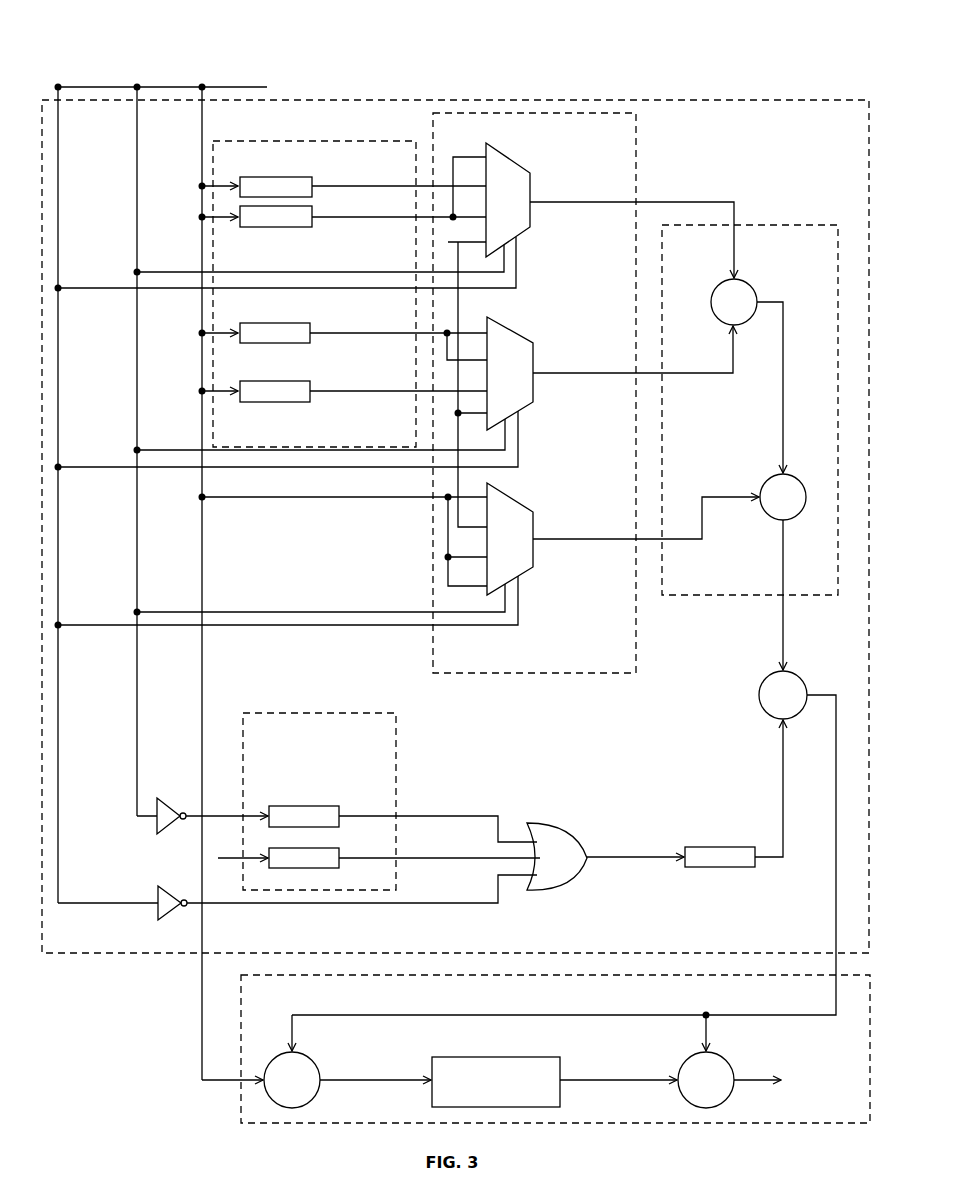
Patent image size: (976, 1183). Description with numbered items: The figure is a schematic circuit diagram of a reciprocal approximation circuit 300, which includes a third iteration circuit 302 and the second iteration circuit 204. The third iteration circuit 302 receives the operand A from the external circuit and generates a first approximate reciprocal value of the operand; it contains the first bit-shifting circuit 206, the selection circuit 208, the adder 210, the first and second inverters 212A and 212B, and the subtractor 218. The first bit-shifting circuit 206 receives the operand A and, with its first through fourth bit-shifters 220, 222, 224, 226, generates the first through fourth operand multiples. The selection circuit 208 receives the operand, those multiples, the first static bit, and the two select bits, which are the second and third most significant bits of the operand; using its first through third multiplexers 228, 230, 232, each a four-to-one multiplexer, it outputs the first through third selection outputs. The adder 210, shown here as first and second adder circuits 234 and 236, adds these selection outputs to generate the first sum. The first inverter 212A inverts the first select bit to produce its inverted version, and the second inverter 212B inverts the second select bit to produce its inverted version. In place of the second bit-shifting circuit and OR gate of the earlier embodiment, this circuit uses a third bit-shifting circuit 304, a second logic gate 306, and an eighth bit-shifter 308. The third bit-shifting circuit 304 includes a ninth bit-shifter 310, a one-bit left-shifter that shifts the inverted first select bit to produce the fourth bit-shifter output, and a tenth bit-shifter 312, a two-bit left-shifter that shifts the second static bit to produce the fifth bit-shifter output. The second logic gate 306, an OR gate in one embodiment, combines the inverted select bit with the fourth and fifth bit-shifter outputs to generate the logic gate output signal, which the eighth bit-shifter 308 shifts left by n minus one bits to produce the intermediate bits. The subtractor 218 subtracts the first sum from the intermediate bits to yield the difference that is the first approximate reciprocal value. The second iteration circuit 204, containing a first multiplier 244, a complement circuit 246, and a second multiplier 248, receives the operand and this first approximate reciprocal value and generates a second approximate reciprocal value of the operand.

The reciprocal approximation circuit 300 is at (105, 45).
The third iteration circuit 302 is at (845, 99).
The second iteration circuit 204 is at (241, 1100).
The first bit-shifting circuit 206 is at (306, 141).
The selection circuit 208 is at (636, 165).
The adder 210 is at (762, 225).
The first inverter 212A is at (175, 789).
The second inverter 212B is at (178, 876).
The subtractor 218 is at (802, 681).
The first bit-shifter 220 is at (265, 177).
The second bit-shifter 222 is at (263, 227).
The third bit-shifter 224 is at (265, 323).
The fourth bit-shifter 226 is at (258, 381).
The first multiplexer 228 is at (505, 157).
The second multiplexer 230 is at (505, 330).
The third multiplexer 232 is at (507, 498).
The first adder circuit 234 is at (751, 287).
The second adder circuit 236 is at (795, 477).
The first multiplier 244 is at (308, 1058).
The complement circuit 246 is at (500, 1057).
The second multiplier 248 is at (722, 1058).
The third bit-shifting circuit 304 is at (396, 753).
The second logic gate 306 is at (553, 826).
The eighth bit-shifter 308 is at (723, 847).
The ninth bit-shifter 310 is at (300, 806).
The tenth bit-shifter 312 is at (300, 848).